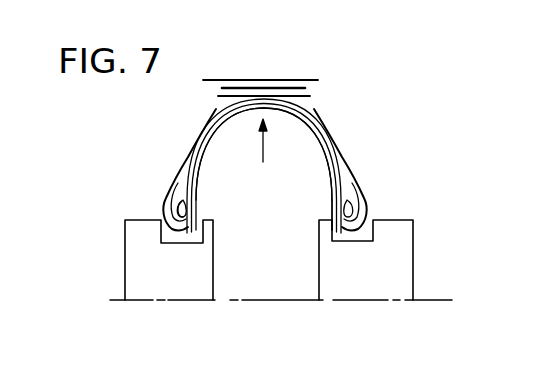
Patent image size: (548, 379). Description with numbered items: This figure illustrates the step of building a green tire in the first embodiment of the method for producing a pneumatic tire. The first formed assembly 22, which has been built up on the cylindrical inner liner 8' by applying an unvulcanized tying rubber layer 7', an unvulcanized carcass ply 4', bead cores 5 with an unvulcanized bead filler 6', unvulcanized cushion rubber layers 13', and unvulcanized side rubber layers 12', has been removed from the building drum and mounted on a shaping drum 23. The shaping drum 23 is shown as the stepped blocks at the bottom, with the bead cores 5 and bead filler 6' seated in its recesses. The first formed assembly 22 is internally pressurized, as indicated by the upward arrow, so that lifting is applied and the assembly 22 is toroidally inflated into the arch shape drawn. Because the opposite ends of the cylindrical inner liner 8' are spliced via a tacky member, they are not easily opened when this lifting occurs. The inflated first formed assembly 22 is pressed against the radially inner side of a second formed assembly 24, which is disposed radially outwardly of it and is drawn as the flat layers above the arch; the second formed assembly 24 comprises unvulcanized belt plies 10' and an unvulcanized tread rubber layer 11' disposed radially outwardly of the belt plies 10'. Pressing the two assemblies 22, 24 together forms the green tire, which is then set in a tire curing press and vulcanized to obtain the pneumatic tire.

The second formed assembly 24 is at (318, 84).
The unvulcanized tread rubber layer 11' is at (261, 50).
The unvulcanized belt plies 10' is at (264, 54).
The first formed assembly 22 is at (193, 142).
The unvulcanized tying rubber layer 7' is at (230, 154).
The unvulcanized carcass ply 4' is at (298, 154).
The cylindrical inner liner 8' is at (308, 204).
The unvulcanized bead filler 6' is at (167, 170).
The unvulcanized side rubber layers 12' is at (363, 170).
The unvulcanized cushion rubber layers 13' is at (383, 198).
The bead cores 5 is at (184, 210).
The shaping drum 23 is at (397, 259).